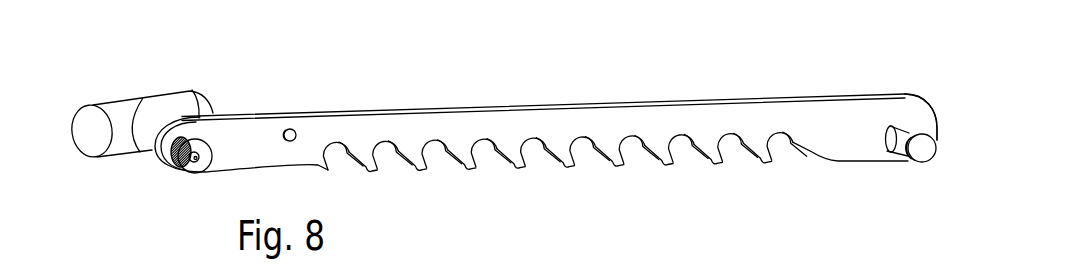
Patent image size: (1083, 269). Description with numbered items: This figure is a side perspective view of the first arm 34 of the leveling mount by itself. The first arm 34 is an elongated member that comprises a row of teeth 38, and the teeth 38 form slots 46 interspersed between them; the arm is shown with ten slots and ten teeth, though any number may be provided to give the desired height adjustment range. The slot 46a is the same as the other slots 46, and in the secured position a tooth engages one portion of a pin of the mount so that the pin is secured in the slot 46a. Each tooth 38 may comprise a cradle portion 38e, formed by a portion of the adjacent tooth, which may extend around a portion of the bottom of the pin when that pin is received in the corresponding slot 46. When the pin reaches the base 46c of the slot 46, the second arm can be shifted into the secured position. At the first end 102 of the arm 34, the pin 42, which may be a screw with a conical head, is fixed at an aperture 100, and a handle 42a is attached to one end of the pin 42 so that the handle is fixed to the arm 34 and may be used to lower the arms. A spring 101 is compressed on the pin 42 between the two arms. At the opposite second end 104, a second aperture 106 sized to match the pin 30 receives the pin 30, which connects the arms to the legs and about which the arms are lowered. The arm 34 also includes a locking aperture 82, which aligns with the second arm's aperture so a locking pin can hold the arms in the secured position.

The pin 30 is at (920, 155).
The first arm 34 is at (359, 74).
The teeth 38 is at (373, 170).
The cradle portion 38e is at (435, 153).
The pin 42 is at (192, 173).
The handle 42a is at (123, 110).
The slots 46 is at (340, 163).
The slot 46a is at (440, 155).
The base of the slot 46c is at (425, 143).
The locking aperture 82 is at (287, 133).
The aperture 100 is at (175, 157).
The spring 101 is at (160, 152).
The first end 102 is at (173, 168).
The second end 104 is at (908, 107).
The second aperture 106 is at (892, 127).